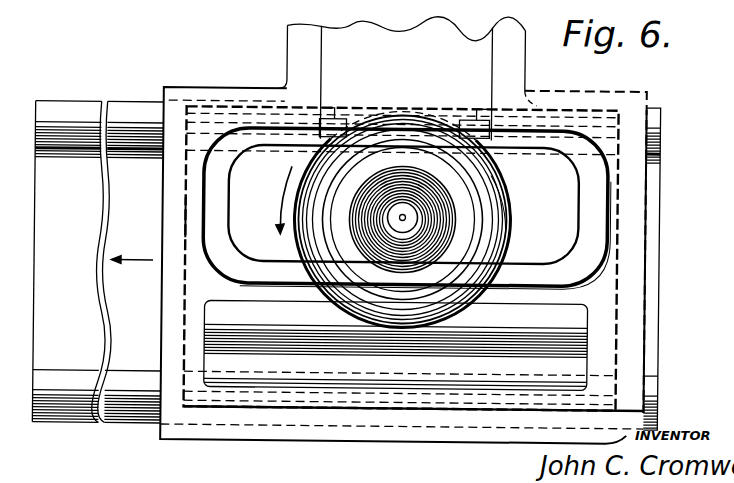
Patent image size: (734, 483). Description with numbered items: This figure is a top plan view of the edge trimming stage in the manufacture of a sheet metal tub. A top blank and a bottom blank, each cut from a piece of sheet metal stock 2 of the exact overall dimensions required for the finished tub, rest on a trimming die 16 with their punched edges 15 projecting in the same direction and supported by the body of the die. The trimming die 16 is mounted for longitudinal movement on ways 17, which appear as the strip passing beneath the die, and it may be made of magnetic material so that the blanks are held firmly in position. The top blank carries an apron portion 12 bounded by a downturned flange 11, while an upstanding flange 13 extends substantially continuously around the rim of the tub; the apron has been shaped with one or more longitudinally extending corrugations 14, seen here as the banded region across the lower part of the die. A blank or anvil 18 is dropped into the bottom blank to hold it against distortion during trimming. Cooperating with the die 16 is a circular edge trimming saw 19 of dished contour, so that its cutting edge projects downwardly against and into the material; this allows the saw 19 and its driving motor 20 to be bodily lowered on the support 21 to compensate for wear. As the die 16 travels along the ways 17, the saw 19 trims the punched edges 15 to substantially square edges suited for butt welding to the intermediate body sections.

The metal stock 2 is at (607, 261).
The downturned flange 11 is at (423, 413).
The apron portion 12 is at (302, 396).
The upstanding flange 13 is at (183, 219).
The longitudinally extending corrugations 14 is at (396, 345).
The punched edge 15 is at (607, 181).
The trimming die 16 is at (170, 322).
The ways 17 is at (72, 113).
The anvil 18 is at (560, 198).
The edge trimming saw 19 is at (503, 236).
The driving motor 20 is at (457, 182).
The support 21 is at (297, 50).